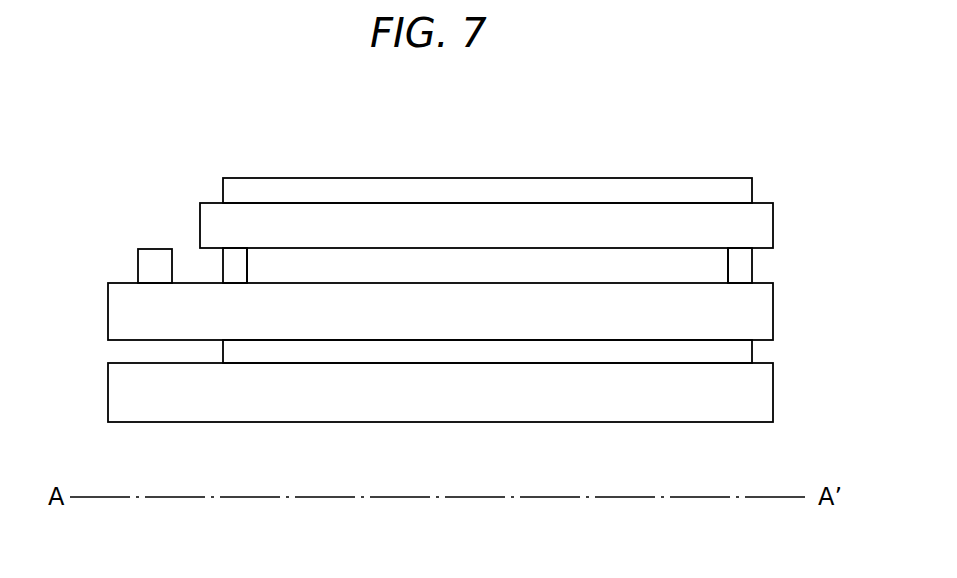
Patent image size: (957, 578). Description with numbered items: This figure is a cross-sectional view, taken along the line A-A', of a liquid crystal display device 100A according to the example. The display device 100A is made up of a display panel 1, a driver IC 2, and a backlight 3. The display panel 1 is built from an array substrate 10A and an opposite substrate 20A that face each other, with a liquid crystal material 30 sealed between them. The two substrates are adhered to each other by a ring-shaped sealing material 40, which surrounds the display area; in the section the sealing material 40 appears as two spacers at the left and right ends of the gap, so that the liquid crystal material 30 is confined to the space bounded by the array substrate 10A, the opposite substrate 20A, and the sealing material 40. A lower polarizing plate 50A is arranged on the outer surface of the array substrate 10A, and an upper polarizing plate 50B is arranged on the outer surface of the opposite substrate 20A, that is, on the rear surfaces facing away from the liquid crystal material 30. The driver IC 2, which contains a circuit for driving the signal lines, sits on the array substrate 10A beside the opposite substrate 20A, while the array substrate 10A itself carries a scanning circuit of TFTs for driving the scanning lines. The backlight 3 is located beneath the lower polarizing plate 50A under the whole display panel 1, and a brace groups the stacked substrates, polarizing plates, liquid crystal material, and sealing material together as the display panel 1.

The display device 100A is at (472, 122).
The display panel 1 is at (813, 179).
The upper polarizing plate 50B is at (325, 190).
The opposite substrate 20A is at (645, 220).
The liquid crystal material 30 is at (532, 263).
The sealing material 40 is at (235, 265).
The array substrate 10A is at (664, 323).
The lower polarizing plate 50A is at (329, 352).
The backlight 3 is at (543, 403).
The driver IC 2 is at (146, 259).